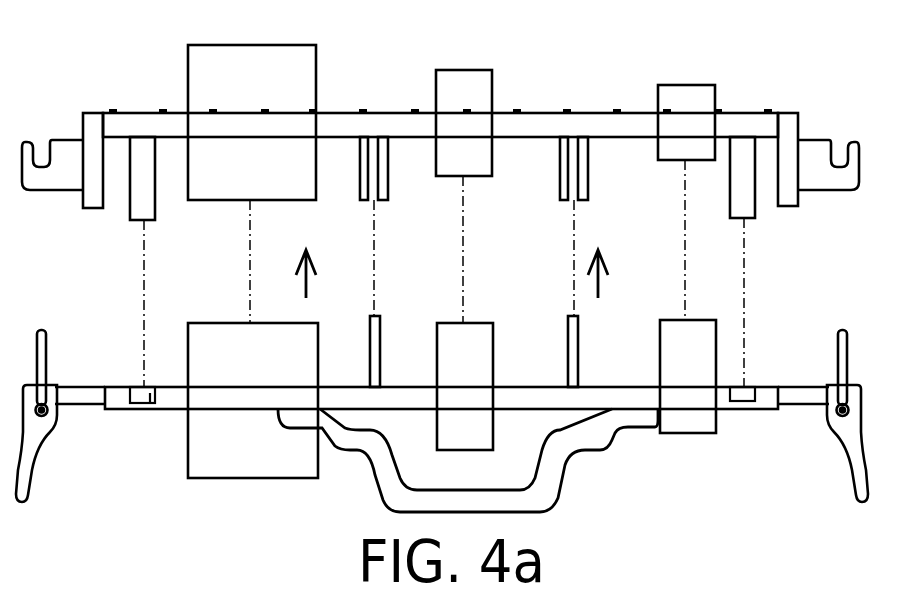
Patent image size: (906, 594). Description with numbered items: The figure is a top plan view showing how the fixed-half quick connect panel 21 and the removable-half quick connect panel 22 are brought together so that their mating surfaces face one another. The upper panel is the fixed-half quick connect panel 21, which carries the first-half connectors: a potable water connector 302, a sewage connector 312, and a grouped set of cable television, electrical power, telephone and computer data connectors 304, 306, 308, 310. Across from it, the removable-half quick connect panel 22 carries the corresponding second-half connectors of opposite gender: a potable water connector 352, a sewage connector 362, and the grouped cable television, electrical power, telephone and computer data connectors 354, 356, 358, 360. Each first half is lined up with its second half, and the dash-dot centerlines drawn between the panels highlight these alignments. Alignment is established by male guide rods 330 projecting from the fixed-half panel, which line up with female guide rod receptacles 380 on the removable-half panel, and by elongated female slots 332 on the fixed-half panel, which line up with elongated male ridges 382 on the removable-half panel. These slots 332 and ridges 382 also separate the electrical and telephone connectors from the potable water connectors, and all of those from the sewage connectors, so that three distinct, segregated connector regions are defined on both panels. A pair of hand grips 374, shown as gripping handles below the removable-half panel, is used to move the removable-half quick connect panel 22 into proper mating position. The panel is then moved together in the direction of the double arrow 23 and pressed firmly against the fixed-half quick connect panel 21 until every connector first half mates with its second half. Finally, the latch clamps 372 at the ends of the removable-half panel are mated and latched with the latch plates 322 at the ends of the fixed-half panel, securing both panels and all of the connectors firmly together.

The fixed-half quick connect panel 21 is at (168, 66).
The removable-half quick connect panel 22 is at (168, 452).
The double arrow 23 is at (312, 278).
The potable water connector first half 302 is at (463, 162).
The cable television connector first half 304 is at (658, 162).
The electrical power connector first half 306 is at (658, 162).
The telephone connector first half 308 is at (658, 162).
The computer data connector first half 310 is at (682, 147).
The sewage connector first half 312 is at (257, 177).
The latch plates 322 is at (58, 165).
The male guide rods 330 is at (147, 182).
The elongated female slots 332 is at (373, 165).
The potable water connector second half 352 is at (467, 353).
The cable television connector second half 354 is at (773, 330).
The electrical power connector second half 356 is at (773, 330).
The telephone connector second half 358 is at (773, 330).
The computer data connector second half 360 is at (692, 355).
The sewage connector second half 362 is at (238, 357).
The latch clamps 372 is at (37, 437).
The hand grips 374 is at (382, 465).
The female guide rod receptacles 380 is at (143, 392).
The elongated male ridges 382 is at (377, 342).